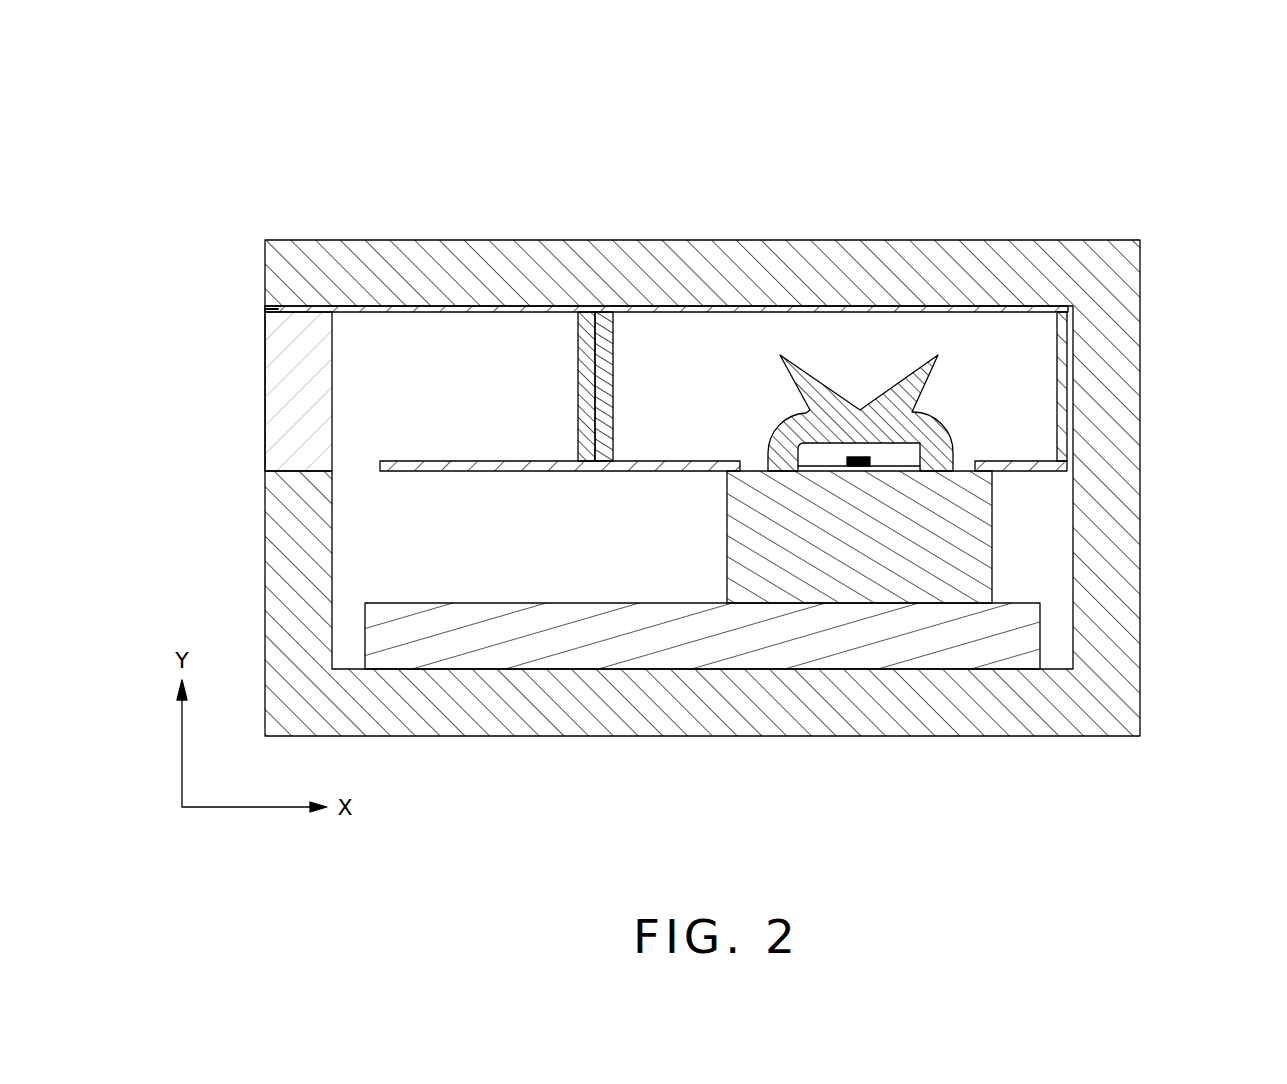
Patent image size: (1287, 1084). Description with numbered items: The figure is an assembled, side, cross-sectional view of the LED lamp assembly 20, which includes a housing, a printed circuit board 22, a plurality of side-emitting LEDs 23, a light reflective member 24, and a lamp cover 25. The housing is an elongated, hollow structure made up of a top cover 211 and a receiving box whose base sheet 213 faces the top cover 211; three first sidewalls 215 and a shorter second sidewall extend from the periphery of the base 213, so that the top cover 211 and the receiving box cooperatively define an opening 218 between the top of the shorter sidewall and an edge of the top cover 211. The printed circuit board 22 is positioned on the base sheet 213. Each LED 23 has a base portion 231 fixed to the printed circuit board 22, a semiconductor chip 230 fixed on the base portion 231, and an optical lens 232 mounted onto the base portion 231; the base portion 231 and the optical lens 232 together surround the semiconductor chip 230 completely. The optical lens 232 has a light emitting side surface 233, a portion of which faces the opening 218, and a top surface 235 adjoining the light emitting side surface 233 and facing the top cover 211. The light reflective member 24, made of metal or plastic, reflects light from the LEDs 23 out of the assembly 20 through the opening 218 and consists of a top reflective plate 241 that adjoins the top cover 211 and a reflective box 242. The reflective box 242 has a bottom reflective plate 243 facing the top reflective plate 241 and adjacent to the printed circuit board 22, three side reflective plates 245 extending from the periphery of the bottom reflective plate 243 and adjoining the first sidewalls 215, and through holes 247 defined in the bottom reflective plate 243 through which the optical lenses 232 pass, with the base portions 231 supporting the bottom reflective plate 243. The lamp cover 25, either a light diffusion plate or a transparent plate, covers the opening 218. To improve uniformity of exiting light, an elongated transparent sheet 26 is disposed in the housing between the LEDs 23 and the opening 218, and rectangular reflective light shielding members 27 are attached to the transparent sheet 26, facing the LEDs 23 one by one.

The LED lamp assembly 20 is at (1100, 125).
The top cover 211 is at (1105, 280).
The base sheet 213 is at (1112, 707).
The first sidewall 215 is at (1122, 475).
The opening 218 is at (265, 308).
The lamp cover 25 is at (293, 407).
The light reflective member 24 is at (858, 95).
The top reflective plate 241 is at (653, 306).
The reflective box 242 is at (1002, 162).
The through hole 247 is at (752, 466).
The bottom reflective plate 243 is at (1000, 467).
The side reflective plate 245 is at (1053, 358).
The transparent sheet 26 is at (578, 368).
The light shielding member 27 is at (601, 318).
The printed circuit board 22 is at (1025, 642).
The side-emitting LED 23 is at (950, 853).
The semiconductor chip 230 is at (858, 467).
The base portion 231 is at (927, 550).
The optical lens 232 is at (725, 797).
The light emitting side surface 233 is at (790, 391).
The top surface 235 is at (836, 402).